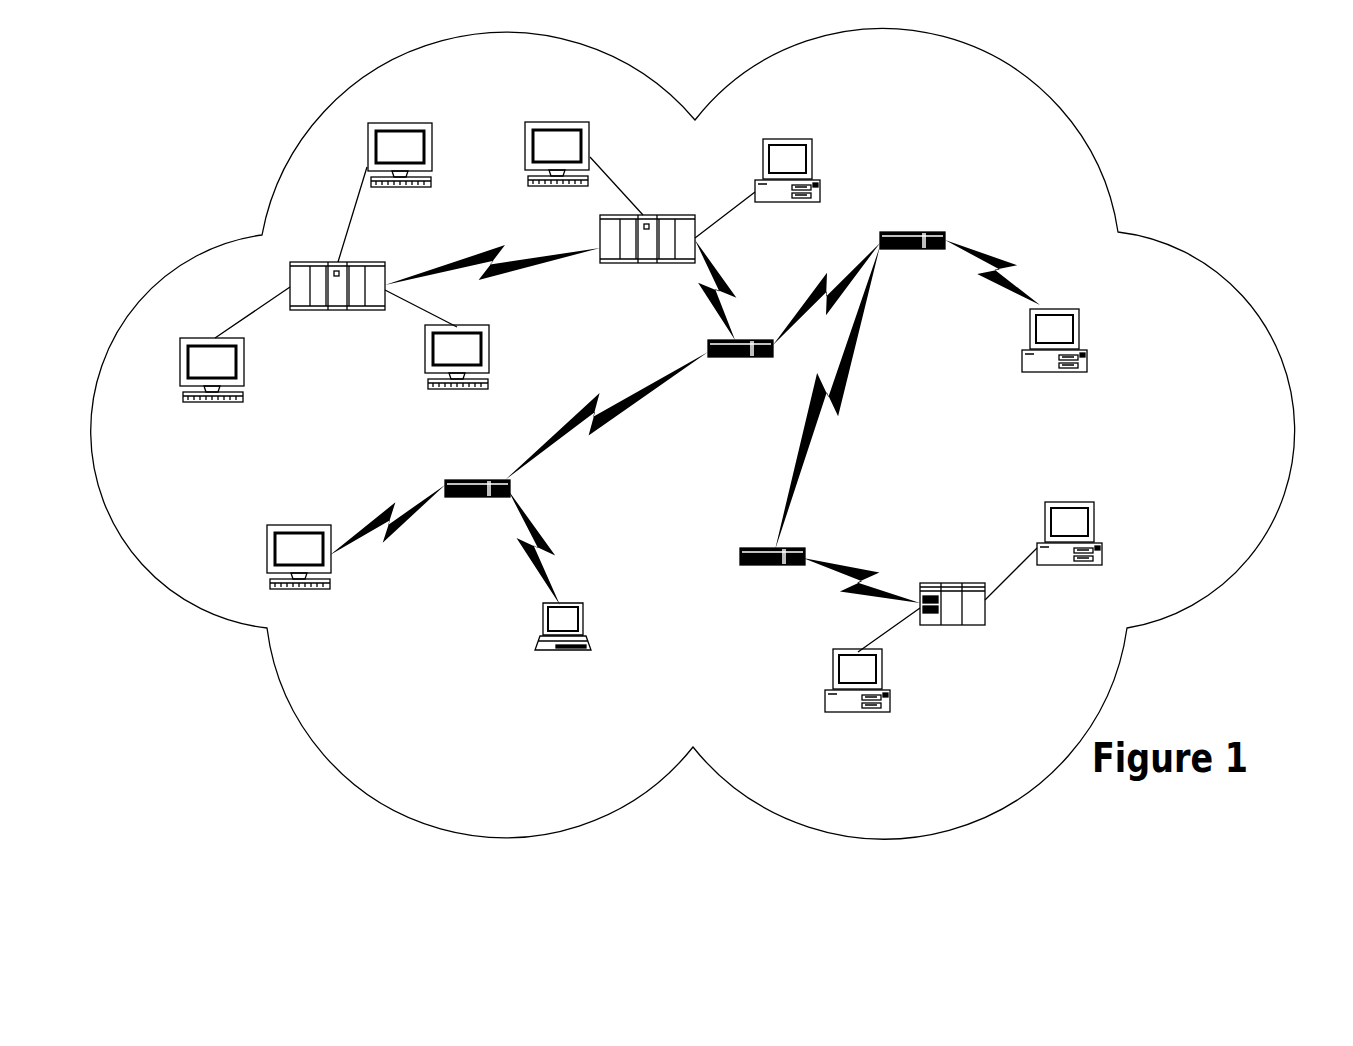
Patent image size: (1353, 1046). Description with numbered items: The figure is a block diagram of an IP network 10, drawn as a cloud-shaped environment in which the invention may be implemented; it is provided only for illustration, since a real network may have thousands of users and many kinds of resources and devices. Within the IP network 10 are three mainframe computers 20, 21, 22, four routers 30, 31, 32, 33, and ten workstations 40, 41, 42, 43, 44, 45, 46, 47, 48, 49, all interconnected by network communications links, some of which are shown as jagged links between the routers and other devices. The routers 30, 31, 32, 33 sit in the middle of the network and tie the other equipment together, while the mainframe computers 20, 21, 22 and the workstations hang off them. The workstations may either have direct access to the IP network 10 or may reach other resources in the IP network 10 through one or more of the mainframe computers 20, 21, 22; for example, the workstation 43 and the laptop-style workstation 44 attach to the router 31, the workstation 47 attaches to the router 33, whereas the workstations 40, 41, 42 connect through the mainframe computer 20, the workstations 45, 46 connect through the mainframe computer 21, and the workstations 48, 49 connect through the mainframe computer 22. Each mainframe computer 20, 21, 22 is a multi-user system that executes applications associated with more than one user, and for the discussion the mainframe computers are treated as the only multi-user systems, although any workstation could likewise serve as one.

The IP network 10 is at (687, 450).
The mainframe computer 20 is at (329, 350).
The mainframe computer 21 is at (640, 303).
The mainframe computer 22 is at (944, 665).
The router 30 is at (732, 396).
The router 31 is at (469, 536).
The router 32 is at (763, 606).
The router 33 is at (905, 288).
The workstation 40 is at (204, 425).
The workstation 41 is at (392, 210).
The workstation 42 is at (449, 412).
The workstation 43 is at (291, 612).
The workstation 44 is at (554, 673).
The workstation 45 is at (549, 210).
The workstation 46 is at (779, 223).
The workstation 47 is at (1046, 394).
The workstation 48 is at (849, 734).
The workstation 49 is at (1061, 588).